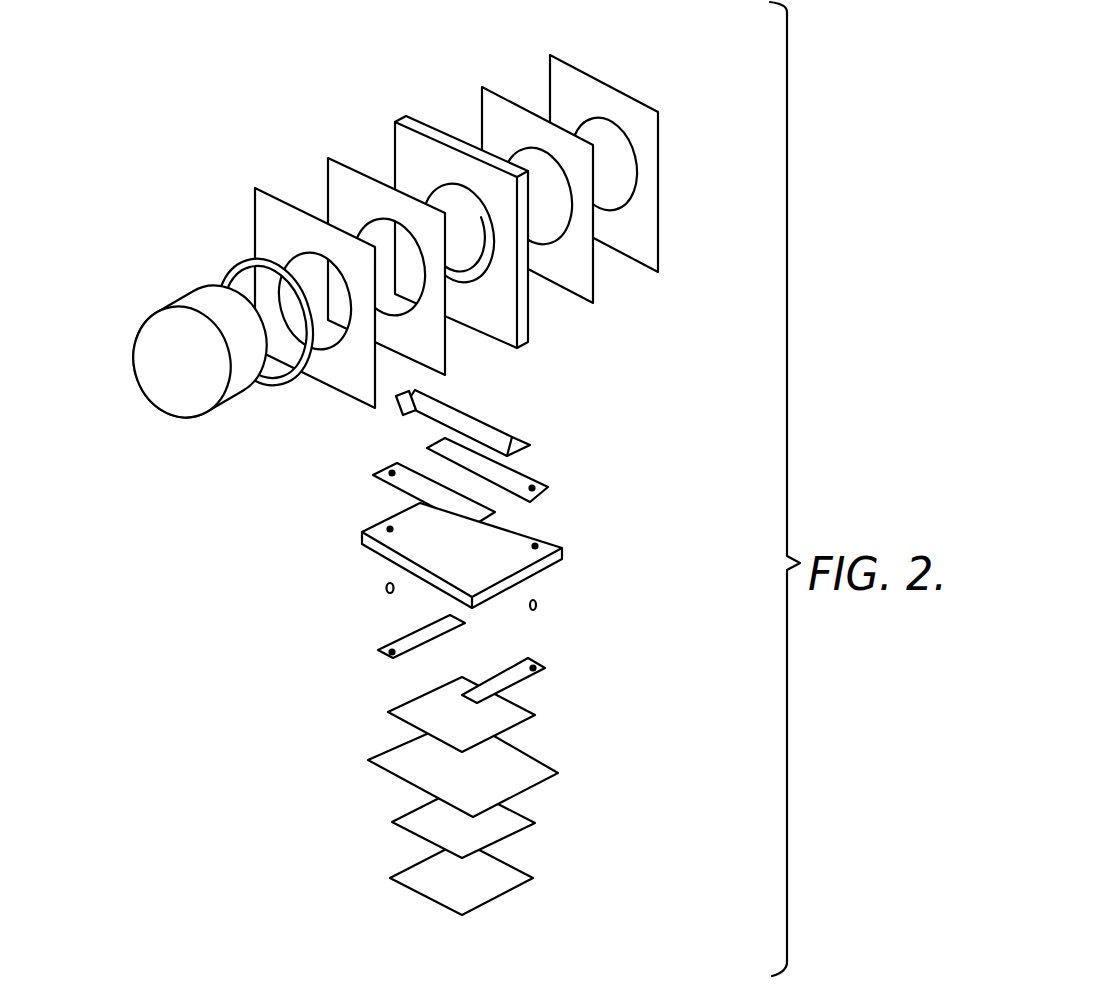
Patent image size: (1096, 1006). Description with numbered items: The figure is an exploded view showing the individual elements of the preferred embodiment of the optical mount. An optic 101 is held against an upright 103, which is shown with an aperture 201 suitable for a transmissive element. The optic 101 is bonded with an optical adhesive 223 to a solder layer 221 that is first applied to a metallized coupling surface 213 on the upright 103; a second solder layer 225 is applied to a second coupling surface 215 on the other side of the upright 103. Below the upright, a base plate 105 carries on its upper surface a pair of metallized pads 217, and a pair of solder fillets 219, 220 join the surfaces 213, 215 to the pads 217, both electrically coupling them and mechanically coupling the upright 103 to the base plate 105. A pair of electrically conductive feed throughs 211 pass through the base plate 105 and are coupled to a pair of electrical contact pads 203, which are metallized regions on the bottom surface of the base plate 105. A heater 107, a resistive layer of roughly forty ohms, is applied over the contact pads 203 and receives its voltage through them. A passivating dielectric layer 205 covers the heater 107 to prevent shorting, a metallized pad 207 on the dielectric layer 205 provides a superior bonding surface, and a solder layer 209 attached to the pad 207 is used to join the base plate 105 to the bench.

The optic 101 is at (138, 315).
The upright 103 is at (395, 121).
The base plate 105 is at (563, 545).
The heater 107 is at (537, 715).
The aperture 201 is at (457, 200).
The electrical contact pads 203 is at (395, 643).
The passivating dielectric layer 205 is at (560, 773).
The metallized pad 207 is at (536, 823).
The solder layer 209 is at (534, 878).
The electrically conductive feed throughs 211 is at (386, 588).
The coupling surface 213 is at (328, 158).
The coupling surface 215 is at (500, 95).
The metallized pads 217 is at (552, 488).
The solder fillet 219 is at (495, 420).
The solder fillet 220 is at (403, 410).
The solder layer 221 is at (255, 190).
The optical adhesive 223 is at (222, 280).
The solder layer 225 is at (635, 98).